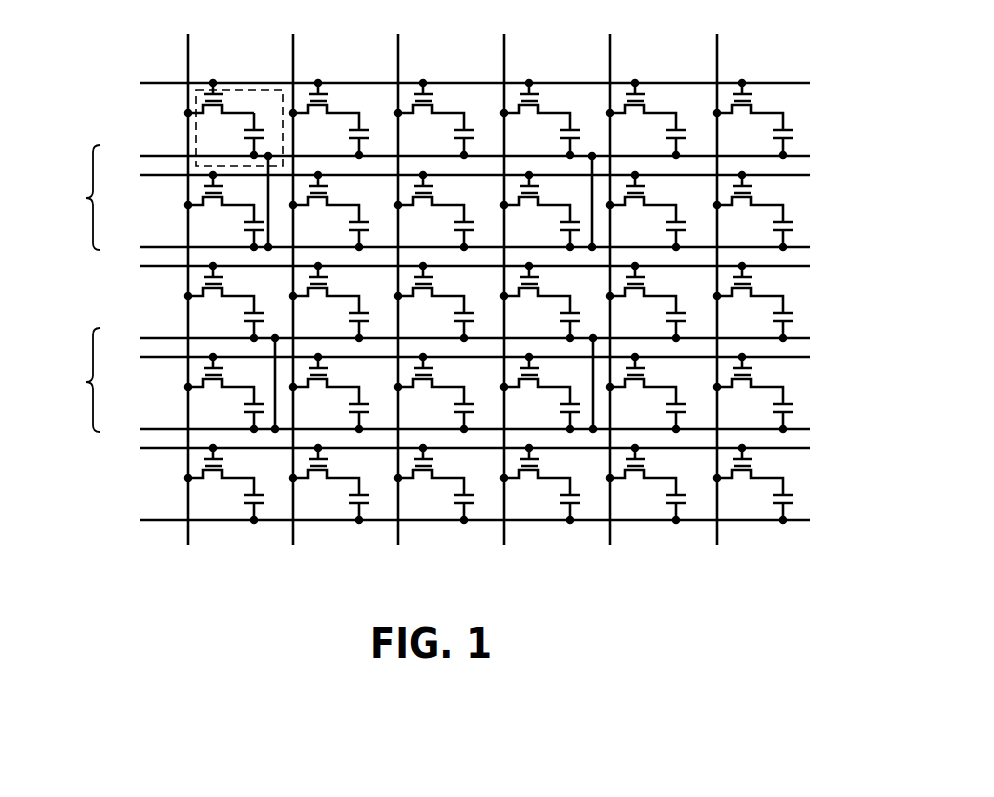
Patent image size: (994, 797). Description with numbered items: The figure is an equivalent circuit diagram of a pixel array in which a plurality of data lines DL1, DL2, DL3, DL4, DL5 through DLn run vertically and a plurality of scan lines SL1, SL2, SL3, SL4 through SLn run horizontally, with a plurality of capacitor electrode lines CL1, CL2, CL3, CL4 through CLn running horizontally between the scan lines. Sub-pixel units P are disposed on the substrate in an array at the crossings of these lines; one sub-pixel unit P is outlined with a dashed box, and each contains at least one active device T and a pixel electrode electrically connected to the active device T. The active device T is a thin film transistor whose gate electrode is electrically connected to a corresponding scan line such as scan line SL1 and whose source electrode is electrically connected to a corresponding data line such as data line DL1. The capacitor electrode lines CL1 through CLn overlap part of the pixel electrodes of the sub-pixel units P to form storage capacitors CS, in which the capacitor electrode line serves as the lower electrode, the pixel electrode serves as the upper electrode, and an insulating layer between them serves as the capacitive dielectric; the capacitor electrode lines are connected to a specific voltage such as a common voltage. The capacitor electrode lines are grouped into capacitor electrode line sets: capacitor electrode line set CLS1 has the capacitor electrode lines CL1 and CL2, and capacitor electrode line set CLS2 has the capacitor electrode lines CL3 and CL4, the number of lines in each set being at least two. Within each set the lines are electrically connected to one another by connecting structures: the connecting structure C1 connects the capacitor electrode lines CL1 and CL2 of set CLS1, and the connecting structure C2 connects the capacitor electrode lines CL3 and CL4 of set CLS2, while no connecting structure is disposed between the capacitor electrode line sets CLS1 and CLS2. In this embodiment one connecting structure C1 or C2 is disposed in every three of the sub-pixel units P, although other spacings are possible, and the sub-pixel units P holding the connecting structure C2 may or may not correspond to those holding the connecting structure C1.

The data line DL1 is at (188, 277).
The data line DL2 is at (293, 277).
The data line DL3 is at (398, 277).
The data line DL4 is at (504, 277).
The data line DL5 is at (610, 277).
The data line DLn is at (717, 277).
The scan line SL1 is at (493, 84).
The scan line SL2 is at (493, 176).
The scan line SL3 is at (493, 267).
The scan line SL4 is at (493, 358).
The scan line SLn is at (493, 449).
The capacitor electrode line CL1 is at (456, 156).
The capacitor electrode line CL2 is at (456, 247).
The capacitor electrode line CL3 is at (456, 338).
The capacitor electrode line CL4 is at (456, 429).
The capacitor electrode line CLn is at (456, 520).
The capacitor electrode line set CLS1 is at (68, 197).
The capacitor electrode line set CLS2 is at (68, 380).
The sub-pixel unit P is at (195, 136).
The active device T is at (216, 87).
The storage capacitor CS is at (245, 129).
The connecting structure C1 is at (268, 225).
The connecting structure C2 is at (275, 412).